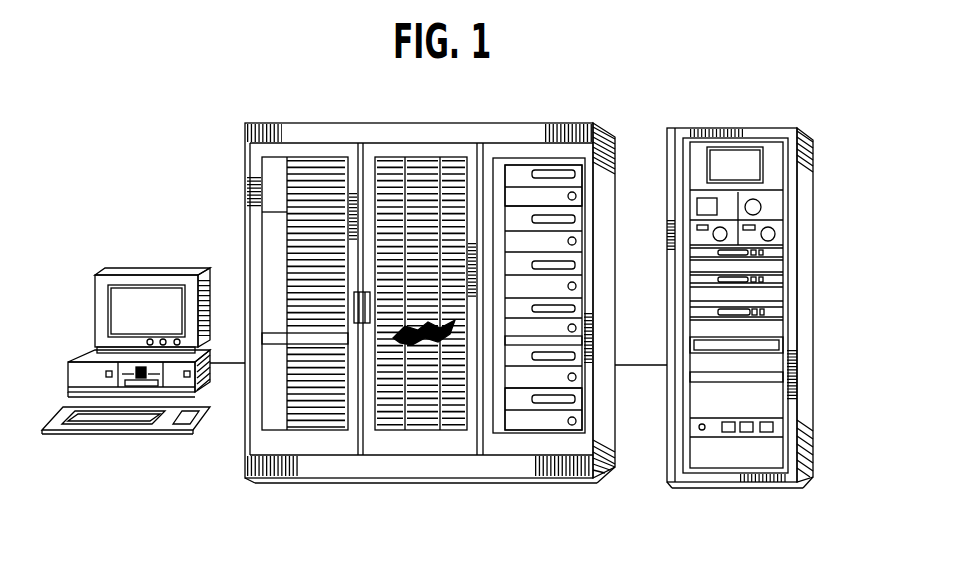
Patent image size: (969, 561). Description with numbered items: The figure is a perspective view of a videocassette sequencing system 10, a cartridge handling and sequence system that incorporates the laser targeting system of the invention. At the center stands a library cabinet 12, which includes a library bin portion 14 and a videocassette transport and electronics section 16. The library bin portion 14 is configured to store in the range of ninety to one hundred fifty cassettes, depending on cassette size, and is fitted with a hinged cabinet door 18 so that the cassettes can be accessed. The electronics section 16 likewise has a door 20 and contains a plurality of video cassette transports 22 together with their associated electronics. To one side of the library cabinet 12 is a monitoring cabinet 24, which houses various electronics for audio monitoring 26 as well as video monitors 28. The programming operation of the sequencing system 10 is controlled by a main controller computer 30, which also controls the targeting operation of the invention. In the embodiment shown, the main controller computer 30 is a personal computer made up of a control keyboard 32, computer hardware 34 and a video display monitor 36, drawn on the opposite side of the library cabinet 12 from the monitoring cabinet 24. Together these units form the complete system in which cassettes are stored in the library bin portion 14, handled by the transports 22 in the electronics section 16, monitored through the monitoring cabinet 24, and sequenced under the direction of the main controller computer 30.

The videocassette sequencing system 10 is at (203, 478).
The library cabinet 12 is at (263, 124).
The library bin portion 14 is at (389, 178).
The videocassette transport and electronics section 16 is at (525, 150).
The hinged cabinet door 18 is at (307, 447).
The door 20 is at (525, 447).
The video cassette transports 22 is at (588, 410).
The monitoring cabinet 24 is at (805, 250).
The audio monitoring electronics 26 is at (768, 321).
The video monitors 28 is at (750, 153).
The main controller computer 30 is at (158, 253).
The control keyboard 32 is at (83, 420).
The computer hardware 34 is at (80, 375).
The video display monitor 36 is at (120, 297).